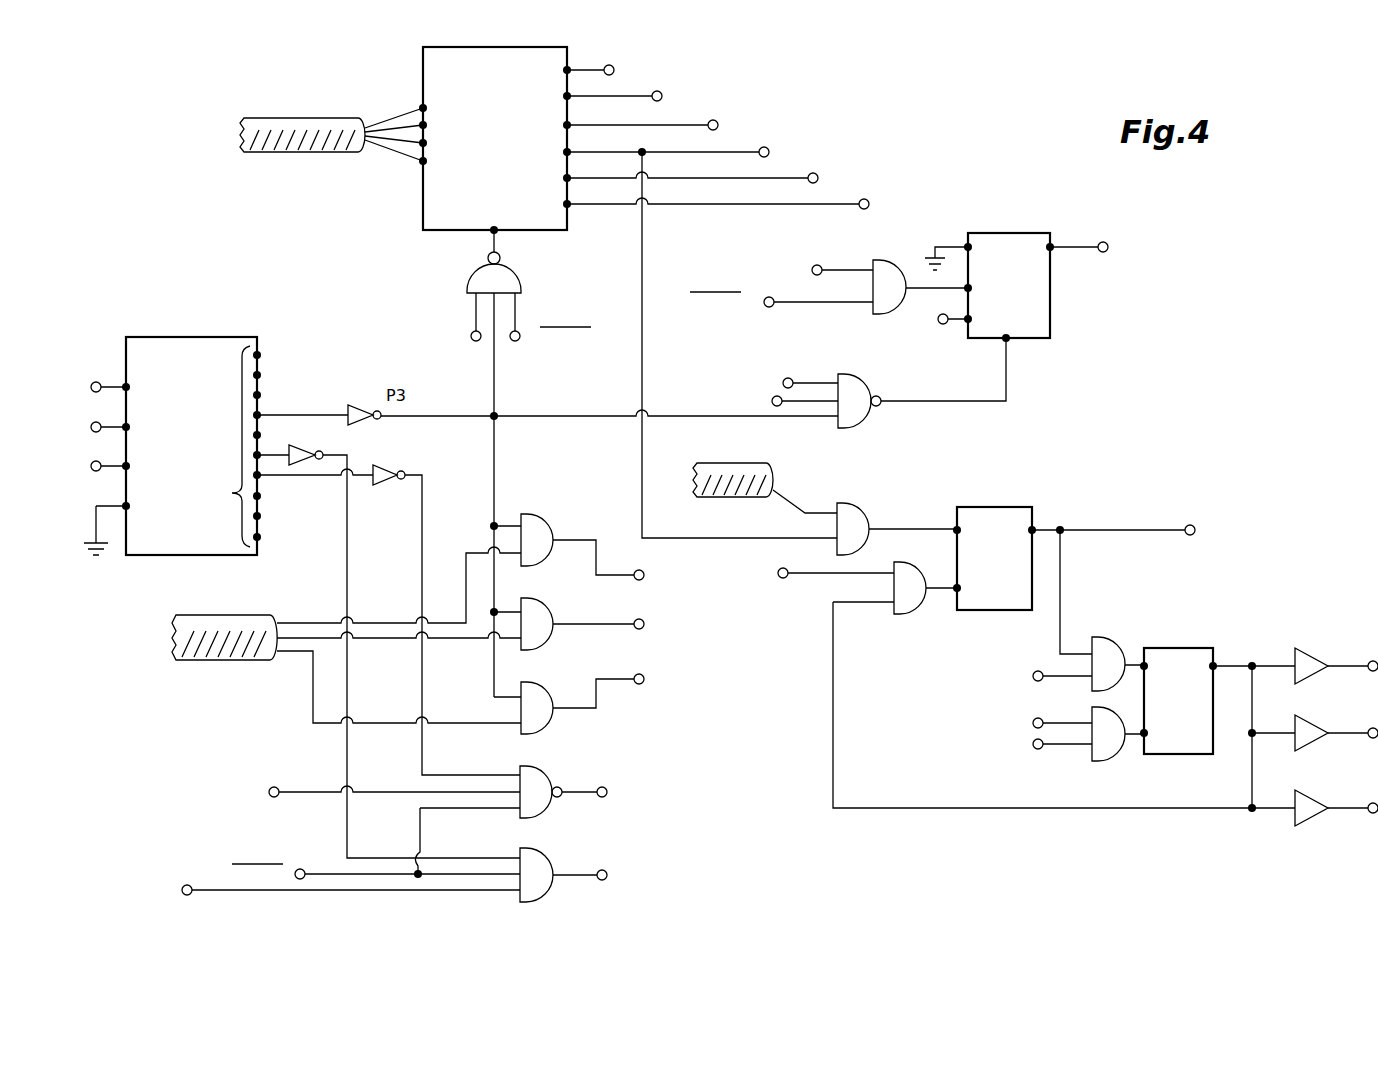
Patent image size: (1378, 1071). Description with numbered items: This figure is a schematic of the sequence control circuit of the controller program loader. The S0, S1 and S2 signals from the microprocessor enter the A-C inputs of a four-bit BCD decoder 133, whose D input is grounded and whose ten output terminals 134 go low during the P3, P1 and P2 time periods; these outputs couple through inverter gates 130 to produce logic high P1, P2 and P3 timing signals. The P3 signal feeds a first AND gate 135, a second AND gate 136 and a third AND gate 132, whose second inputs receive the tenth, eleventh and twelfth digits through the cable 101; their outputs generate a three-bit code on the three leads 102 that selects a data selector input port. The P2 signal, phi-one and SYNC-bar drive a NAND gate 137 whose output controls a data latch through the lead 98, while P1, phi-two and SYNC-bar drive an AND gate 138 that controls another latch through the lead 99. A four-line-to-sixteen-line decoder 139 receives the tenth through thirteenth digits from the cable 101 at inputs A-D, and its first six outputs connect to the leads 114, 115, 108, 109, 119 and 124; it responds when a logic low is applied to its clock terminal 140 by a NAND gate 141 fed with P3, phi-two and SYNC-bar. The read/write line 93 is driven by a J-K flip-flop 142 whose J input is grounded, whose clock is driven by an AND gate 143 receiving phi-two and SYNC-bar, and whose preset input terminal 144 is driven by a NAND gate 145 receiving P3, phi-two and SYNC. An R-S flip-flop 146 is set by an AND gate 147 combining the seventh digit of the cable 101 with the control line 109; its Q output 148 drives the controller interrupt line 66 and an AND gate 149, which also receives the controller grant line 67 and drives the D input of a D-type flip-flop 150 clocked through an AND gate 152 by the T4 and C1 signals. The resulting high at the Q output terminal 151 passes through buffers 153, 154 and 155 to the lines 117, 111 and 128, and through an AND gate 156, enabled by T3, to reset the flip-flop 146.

The four-line-to-sixteen-line decoder 139 is at (503, 47).
The cable 101 is at (303, 118).
The lead 114 is at (614, 66).
The lead 115 is at (662, 92).
The lead 108 is at (718, 121).
The control line 109 is at (769, 148).
The lead 119 is at (818, 174).
The lead 124 is at (869, 200).
The clock terminal 140 is at (490, 233).
The NAND gate 141 is at (462, 293).
The four-bit BCD decoder 133 is at (222, 335).
The output terminals 134 is at (228, 500).
The inverter gates 130 is at (322, 444).
The third AND gate 132 is at (542, 514).
The first AND gate 135 is at (545, 600).
The second AND gate 136 is at (545, 688).
The leads 102 is at (645, 577).
The NAND gate 137 is at (545, 776).
The AND gate 138 is at (545, 858).
The lead 98 is at (607, 789).
The lead 99 is at (607, 875).
The AND gate 143 is at (886, 261).
The J-K flip-flop 142 is at (1044, 286).
The read/write line 93 is at (1108, 250).
The preset input terminal 144 is at (1010, 341).
The NAND gate 145 is at (868, 419).
The AND gate 147 is at (858, 505).
The R-S flip-flop 146 is at (1012, 568).
The Q output 148 is at (1036, 526).
The controller interrupt line 66 is at (1194, 526).
The AND gate 156 is at (916, 612).
The AND gate 149 is at (1112, 640).
The controller grant line 67 is at (1037, 670).
The D-type flip-flop 150 is at (1192, 703).
The Q output terminal 151 is at (1216, 662).
The AND gate 152 is at (1108, 760).
The buffer 153 is at (1307, 658).
The line 117 is at (1373, 660).
The buffer 154 is at (1307, 724).
The line 111 is at (1373, 727).
The buffer 155 is at (1307, 798).
The line 128 is at (1373, 801).